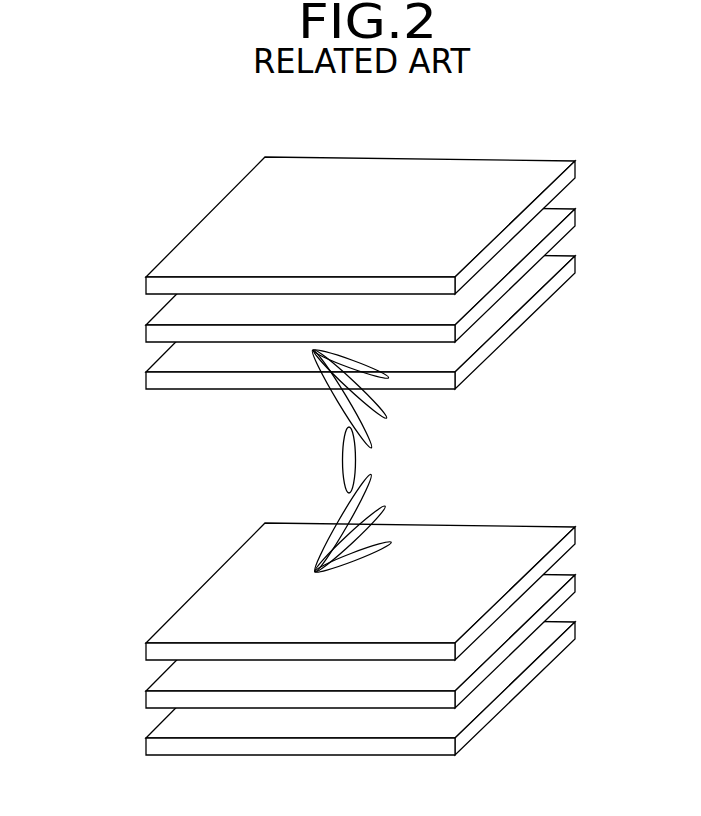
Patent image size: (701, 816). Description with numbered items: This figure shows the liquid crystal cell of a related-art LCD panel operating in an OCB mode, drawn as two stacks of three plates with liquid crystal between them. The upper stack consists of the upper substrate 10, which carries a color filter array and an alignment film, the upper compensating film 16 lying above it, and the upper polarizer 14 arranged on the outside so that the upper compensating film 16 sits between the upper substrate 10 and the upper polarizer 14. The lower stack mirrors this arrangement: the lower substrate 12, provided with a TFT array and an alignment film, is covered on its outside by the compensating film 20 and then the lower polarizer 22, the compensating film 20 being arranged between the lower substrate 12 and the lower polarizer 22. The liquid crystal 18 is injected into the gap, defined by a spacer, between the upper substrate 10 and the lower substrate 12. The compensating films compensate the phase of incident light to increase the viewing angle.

The upper substrate 10 is at (147, 380).
The lower substrate 12 is at (147, 651).
The upper polarizer 14 is at (147, 283).
The upper compensating film 16 is at (147, 333).
The liquid crystal 18 is at (346, 460).
The compensating film 20 is at (147, 699).
The lower polarizer 22 is at (147, 746).